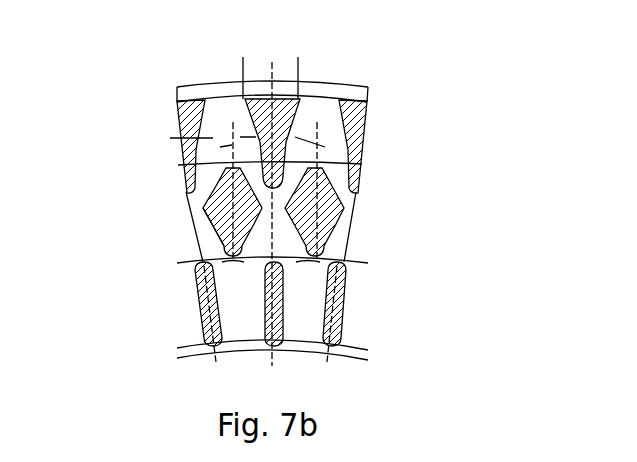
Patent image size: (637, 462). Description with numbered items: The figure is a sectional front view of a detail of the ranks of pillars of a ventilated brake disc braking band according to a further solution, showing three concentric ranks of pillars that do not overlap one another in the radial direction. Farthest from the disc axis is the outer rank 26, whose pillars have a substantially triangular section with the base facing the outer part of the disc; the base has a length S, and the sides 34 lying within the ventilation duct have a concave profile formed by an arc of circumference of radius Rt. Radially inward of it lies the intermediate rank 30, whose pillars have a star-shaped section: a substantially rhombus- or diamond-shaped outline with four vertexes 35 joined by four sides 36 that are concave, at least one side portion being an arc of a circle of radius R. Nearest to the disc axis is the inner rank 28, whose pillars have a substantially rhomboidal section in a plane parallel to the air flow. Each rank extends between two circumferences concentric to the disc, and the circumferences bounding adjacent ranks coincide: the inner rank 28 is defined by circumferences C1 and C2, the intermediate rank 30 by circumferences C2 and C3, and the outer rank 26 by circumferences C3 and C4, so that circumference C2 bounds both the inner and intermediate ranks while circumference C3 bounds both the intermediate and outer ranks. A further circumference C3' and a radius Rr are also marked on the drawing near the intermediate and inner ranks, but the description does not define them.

The outer rank 26 is at (183, 138).
The inner rank 28 is at (207, 308).
The intermediate rank 30 is at (228, 216).
The sides 34 is at (225, 115).
The vertexes 35 is at (235, 263).
The sides 36 is at (213, 232).
The circumference C1 is at (357, 347).
The circumference C2 is at (364, 265).
The circumference C3 is at (305, 140).
The circle C3' is at (404, 159).
The circumference C4 is at (357, 93).
The radius R is at (327, 233).
The root radius Rr is at (308, 264).
The radius Rt is at (183, 138).
The length S is at (298, 62).